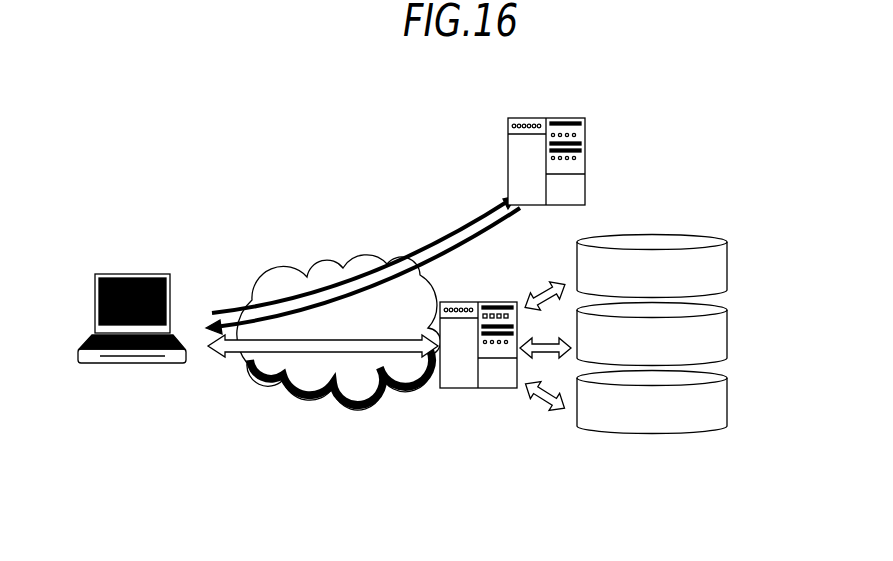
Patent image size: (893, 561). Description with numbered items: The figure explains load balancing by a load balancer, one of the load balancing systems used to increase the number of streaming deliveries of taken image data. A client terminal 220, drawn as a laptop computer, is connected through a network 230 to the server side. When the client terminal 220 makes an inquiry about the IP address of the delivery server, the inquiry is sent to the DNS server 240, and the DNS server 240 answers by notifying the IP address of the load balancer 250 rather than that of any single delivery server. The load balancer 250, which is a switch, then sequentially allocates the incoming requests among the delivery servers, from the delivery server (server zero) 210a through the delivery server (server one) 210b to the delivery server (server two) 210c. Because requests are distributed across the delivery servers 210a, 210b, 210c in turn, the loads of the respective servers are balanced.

The client terminal 220 is at (130, 360).
The network 230 is at (317, 383).
The DNS server 240 is at (540, 118).
The load balancer 250 is at (465, 386).
The delivery server (server 0) 210a is at (723, 268).
The delivery server (server 1) 210b is at (723, 337).
The delivery server (server 2) 210c is at (723, 404).